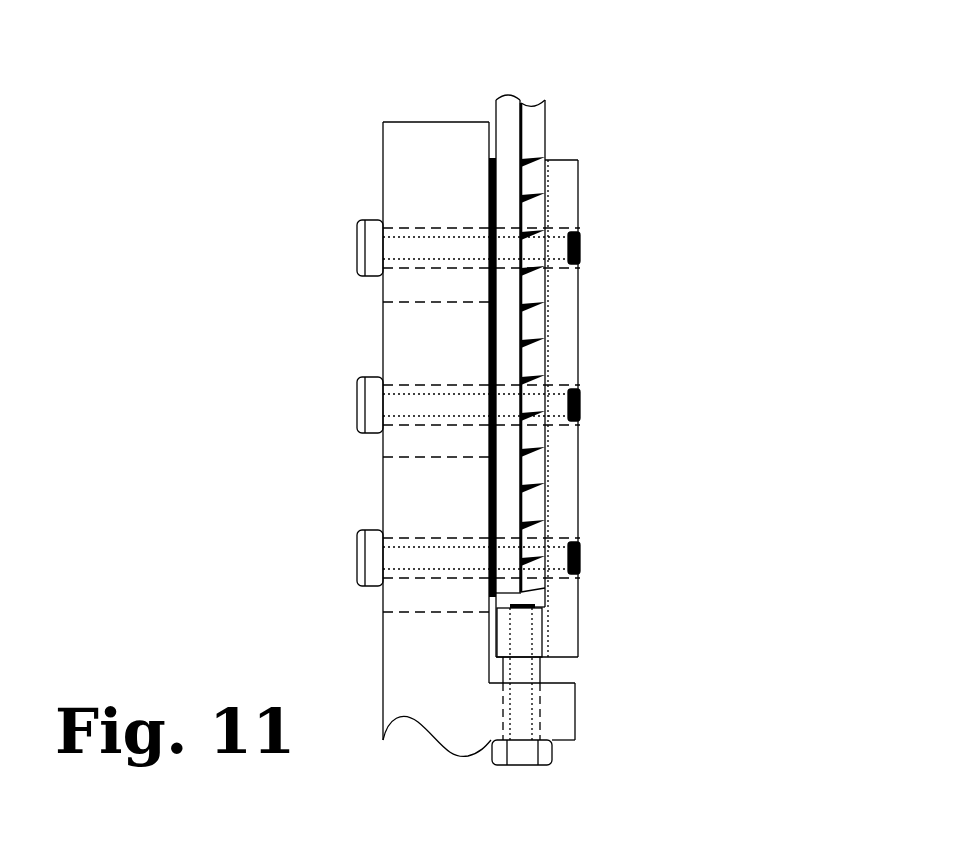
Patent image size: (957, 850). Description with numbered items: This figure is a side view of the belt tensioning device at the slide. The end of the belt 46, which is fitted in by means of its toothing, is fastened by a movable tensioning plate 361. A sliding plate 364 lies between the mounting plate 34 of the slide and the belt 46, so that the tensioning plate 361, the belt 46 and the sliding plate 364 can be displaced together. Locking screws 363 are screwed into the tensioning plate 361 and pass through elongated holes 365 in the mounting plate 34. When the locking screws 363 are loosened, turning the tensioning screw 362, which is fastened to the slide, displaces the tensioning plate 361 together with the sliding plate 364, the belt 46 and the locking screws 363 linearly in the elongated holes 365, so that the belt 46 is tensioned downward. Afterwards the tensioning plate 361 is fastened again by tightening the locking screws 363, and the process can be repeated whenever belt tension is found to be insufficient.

The mounting plate 34 is at (382, 657).
The belt 46 is at (515, 142).
The tensioning plate 361 is at (563, 208).
The tensioning screw 362 is at (525, 665).
The locking screws 363 is at (568, 562).
The sliding plate 364 is at (489, 190).
The elongated holes 365 is at (400, 533).